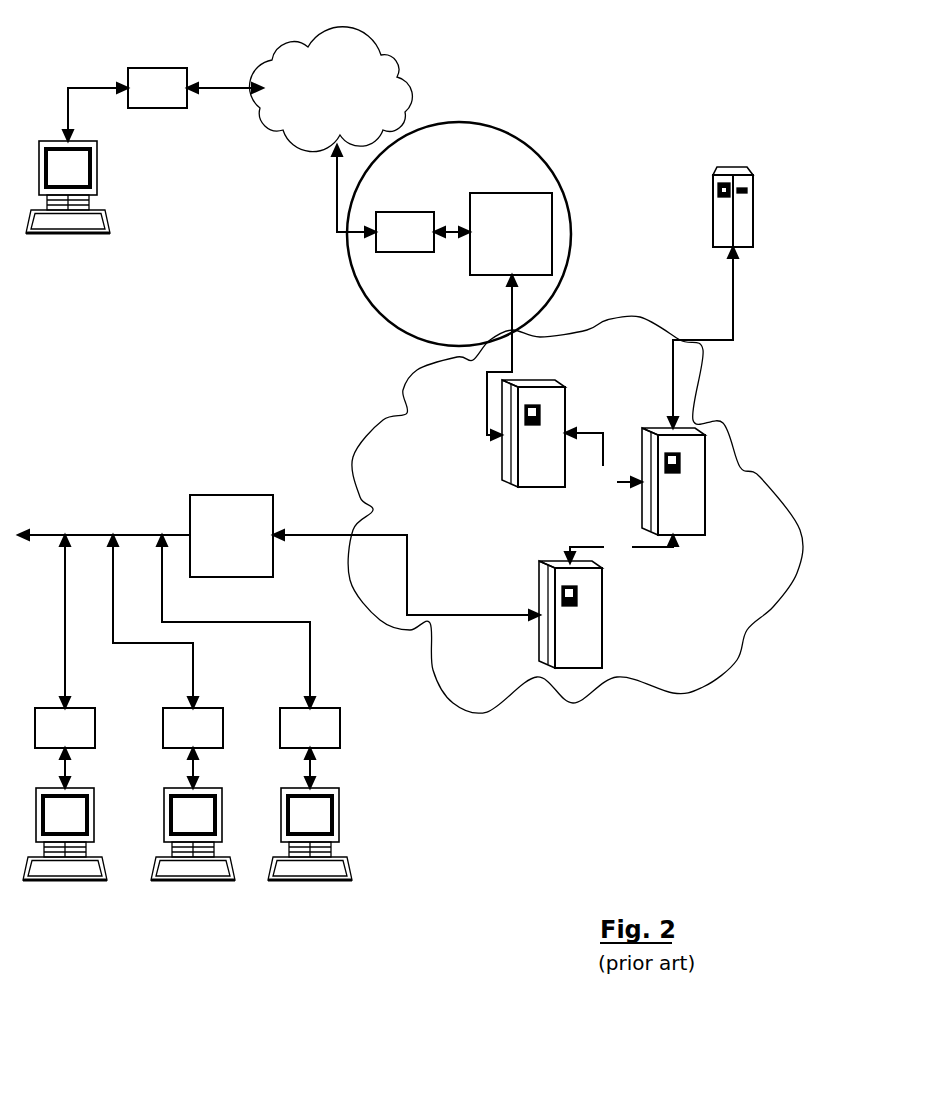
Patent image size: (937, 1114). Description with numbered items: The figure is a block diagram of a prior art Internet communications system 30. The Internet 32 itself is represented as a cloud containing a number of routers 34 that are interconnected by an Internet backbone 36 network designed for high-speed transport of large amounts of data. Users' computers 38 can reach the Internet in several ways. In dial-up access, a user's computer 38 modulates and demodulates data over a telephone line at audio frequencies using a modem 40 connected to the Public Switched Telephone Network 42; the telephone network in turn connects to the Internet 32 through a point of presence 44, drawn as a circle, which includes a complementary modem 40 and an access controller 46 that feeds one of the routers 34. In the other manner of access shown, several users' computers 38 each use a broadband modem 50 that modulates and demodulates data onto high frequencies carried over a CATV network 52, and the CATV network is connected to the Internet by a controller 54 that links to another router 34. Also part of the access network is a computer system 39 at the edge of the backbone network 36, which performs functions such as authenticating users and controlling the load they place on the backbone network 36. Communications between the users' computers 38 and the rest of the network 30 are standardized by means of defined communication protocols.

The Internet communications system 30 is at (630, 78).
The Internet 32 is at (575, 514).
The router 34 is at (603, 524).
The Internet backbone network 36 is at (621, 495).
The user's computer 38 is at (187, 510).
The computer system 39 is at (733, 186).
The modem 40 is at (281, 160).
The Public Switched Telephone Network 42 is at (330, 89).
The point of presence 44 is at (459, 234).
The access controller 46 is at (511, 234).
The broadband modem 50 is at (187, 728).
The CATV network 52 is at (104, 518).
The controller 54 is at (231, 536).